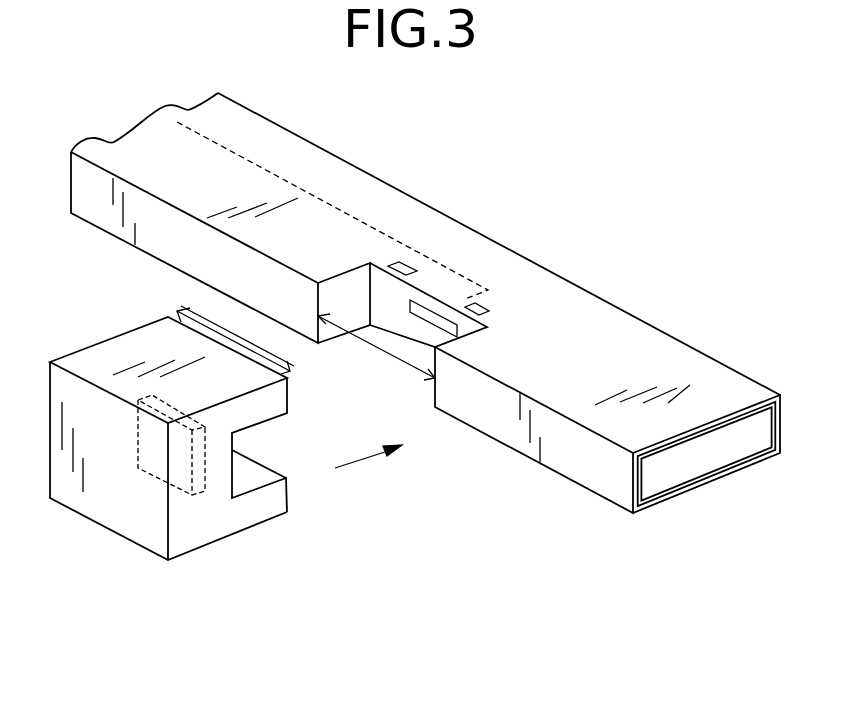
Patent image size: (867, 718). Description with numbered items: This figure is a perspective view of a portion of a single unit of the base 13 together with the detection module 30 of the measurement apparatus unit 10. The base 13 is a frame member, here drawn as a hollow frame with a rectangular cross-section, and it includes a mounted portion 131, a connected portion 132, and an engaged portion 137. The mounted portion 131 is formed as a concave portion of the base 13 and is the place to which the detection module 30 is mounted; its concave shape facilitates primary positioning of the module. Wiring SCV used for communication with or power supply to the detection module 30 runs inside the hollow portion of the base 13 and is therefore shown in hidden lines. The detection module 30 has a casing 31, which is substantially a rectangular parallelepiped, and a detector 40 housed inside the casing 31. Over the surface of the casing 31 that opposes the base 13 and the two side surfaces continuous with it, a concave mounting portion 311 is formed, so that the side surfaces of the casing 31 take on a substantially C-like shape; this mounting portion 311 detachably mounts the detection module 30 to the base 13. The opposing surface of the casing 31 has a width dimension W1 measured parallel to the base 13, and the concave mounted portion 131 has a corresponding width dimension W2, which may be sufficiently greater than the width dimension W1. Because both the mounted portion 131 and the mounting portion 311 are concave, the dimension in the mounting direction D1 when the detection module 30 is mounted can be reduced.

The measurement apparatus unit 10 is at (503, 150).
The base 13 is at (593, 327).
The mounted portion 131 is at (332, 305).
The connected portion 132 is at (455, 340).
The engaged portion 137 is at (397, 265).
The detection module 30 is at (149, 618).
The casing 31 is at (106, 344).
The mounting portion 311 is at (252, 430).
The detector 40 is at (134, 442).
The wiring SCV is at (232, 152).
The width dimension W1 is at (235, 340).
The width dimension W2 is at (376, 348).
The mounting direction D1 is at (368, 466).